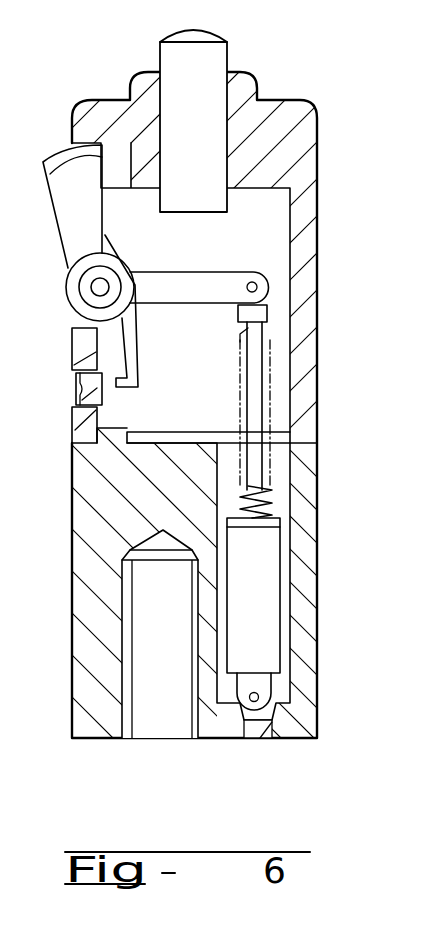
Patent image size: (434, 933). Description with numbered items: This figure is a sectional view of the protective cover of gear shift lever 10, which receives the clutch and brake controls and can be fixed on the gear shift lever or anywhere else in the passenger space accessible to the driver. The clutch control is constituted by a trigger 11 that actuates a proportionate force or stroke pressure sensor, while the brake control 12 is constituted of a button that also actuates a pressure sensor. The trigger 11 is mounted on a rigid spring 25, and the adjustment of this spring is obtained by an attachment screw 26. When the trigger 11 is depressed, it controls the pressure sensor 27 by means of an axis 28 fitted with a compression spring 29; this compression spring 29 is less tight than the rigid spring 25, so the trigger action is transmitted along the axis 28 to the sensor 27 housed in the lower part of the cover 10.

The protective cover of gear shift lever 10 is at (105, 703).
The trigger 11 is at (72, 205).
The brake control 12 is at (215, 67).
The rigid spring 25 is at (130, 331).
The attachment screw 26 is at (72, 408).
The pressure sensor 27 is at (262, 620).
The axis 28 is at (258, 397).
The compression spring 29 is at (242, 334).